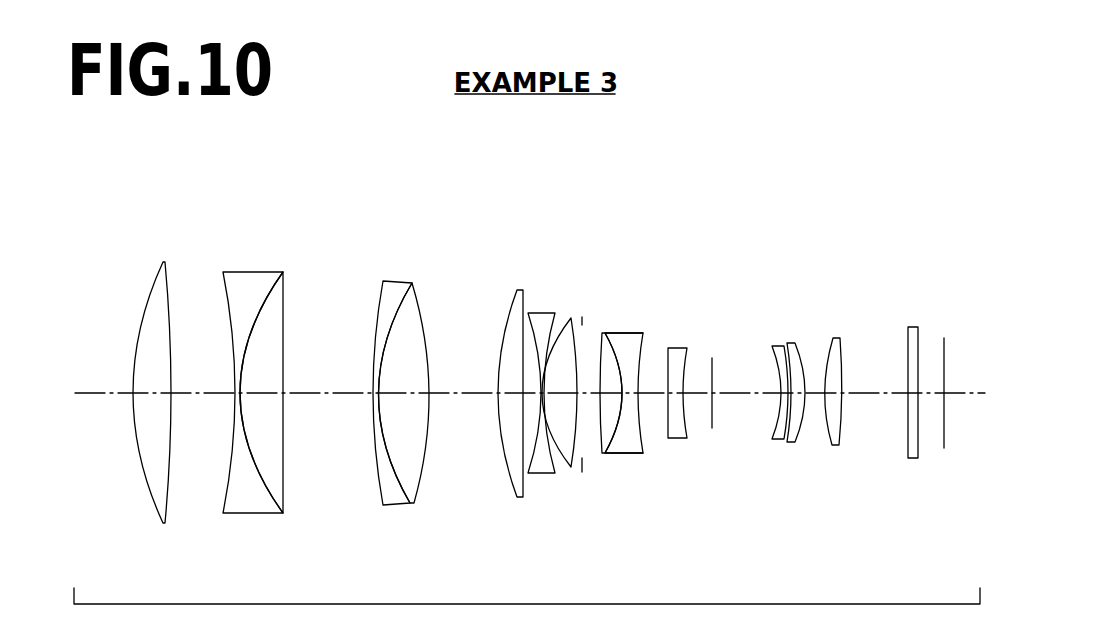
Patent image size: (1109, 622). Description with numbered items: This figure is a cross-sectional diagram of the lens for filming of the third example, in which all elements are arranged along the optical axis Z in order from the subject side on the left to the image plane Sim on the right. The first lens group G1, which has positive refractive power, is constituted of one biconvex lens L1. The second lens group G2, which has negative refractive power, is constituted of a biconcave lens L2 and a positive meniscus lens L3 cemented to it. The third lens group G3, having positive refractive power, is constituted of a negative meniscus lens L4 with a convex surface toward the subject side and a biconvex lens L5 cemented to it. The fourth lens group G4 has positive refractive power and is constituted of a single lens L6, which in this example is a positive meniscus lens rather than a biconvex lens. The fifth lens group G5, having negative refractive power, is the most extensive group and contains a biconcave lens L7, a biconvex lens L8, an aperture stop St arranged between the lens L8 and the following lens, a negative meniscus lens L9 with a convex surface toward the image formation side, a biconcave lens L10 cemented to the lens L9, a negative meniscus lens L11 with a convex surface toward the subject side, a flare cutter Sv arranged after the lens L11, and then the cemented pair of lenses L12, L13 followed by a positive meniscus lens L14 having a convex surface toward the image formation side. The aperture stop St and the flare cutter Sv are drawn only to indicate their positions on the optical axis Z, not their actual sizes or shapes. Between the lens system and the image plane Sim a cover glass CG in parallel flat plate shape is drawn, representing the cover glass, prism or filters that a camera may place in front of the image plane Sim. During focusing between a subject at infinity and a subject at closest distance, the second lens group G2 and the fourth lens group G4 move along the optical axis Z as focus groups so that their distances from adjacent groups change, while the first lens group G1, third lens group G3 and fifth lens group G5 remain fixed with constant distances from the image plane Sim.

The first lens group G1 is at (180, 175).
The second lens group G2 is at (295, 175).
The third lens group G3 is at (362, 175).
The fourth lens group G4 is at (477, 175).
The fifth lens group G5 is at (542, 175).
The biconvex lens L1 is at (163, 262).
The biconcave lens L2 is at (245, 272).
The positive meniscus lens L3 is at (283, 272).
The negative meniscus lens L4 is at (395, 281).
The biconvex lens L5 is at (412, 283).
The positive meniscus lens L6 is at (522, 290).
The biconcave lens L7 is at (545, 313).
The biconvex lens L8 is at (571, 318).
The negative meniscus lens L9 is at (606, 333).
The biconcave lens L10 is at (630, 333).
The negative meniscus lens L11 is at (677, 348).
The negative meniscus lens L12 is at (777, 346).
The positive meniscus lens L13 is at (790, 343).
The positive meniscus lens L14 is at (840, 338).
The aperture stop St is at (582, 473).
The flare cutter Sv is at (711, 430).
The cover glass CG is at (911, 327).
The image plane Sim is at (944, 352).
The optical axis Z is at (103, 393).